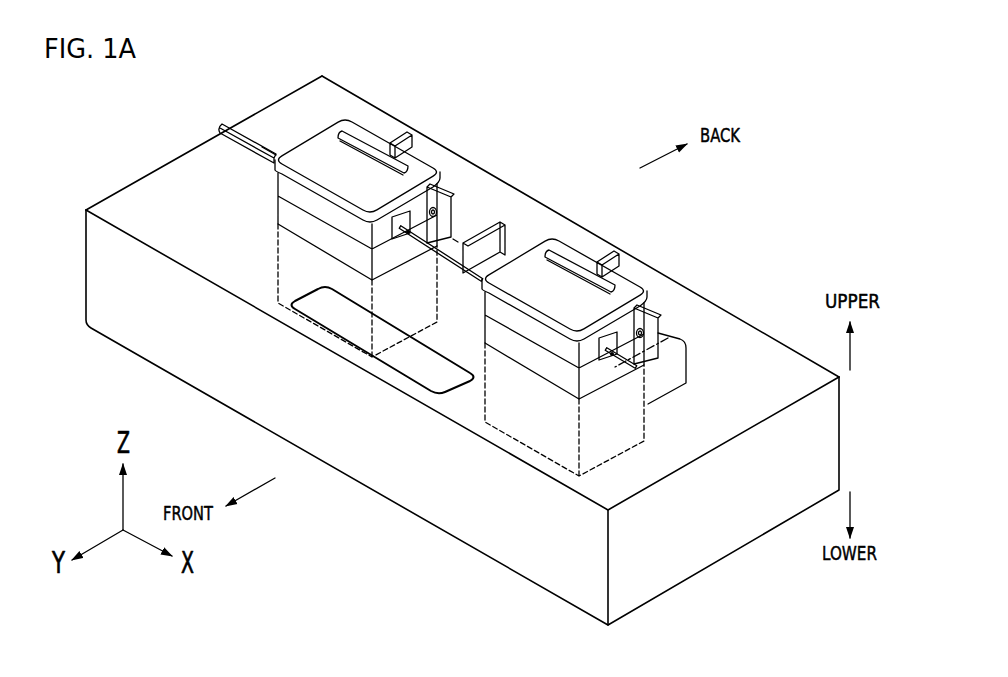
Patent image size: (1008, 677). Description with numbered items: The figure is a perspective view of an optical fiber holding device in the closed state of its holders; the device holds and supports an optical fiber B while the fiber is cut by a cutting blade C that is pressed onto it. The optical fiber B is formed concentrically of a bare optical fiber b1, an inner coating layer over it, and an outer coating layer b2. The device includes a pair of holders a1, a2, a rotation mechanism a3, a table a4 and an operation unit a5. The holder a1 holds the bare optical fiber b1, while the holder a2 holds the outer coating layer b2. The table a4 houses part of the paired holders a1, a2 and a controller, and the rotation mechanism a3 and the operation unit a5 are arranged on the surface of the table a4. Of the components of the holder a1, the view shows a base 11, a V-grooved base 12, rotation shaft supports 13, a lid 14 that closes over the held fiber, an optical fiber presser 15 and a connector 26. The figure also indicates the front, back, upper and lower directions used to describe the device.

The base 11 is at (277, 207).
The V-grooved base 12 is at (397, 243).
The rotation shaft supports 13 is at (440, 228).
The lid 14 is at (623, 272).
The optical fiber presser 15 is at (428, 204).
The connector 26 is at (402, 134).
The optical fiber B is at (242, 128).
The cutting blade C is at (503, 228).
The holder a1 is at (573, 235).
The holder a2 is at (363, 120).
The rotation mechanism a3 is at (687, 368).
The table a4 is at (678, 283).
The operation unit a5 is at (403, 374).
The bare optical fiber b1 is at (455, 240).
The outer coating layer b2 is at (264, 148).